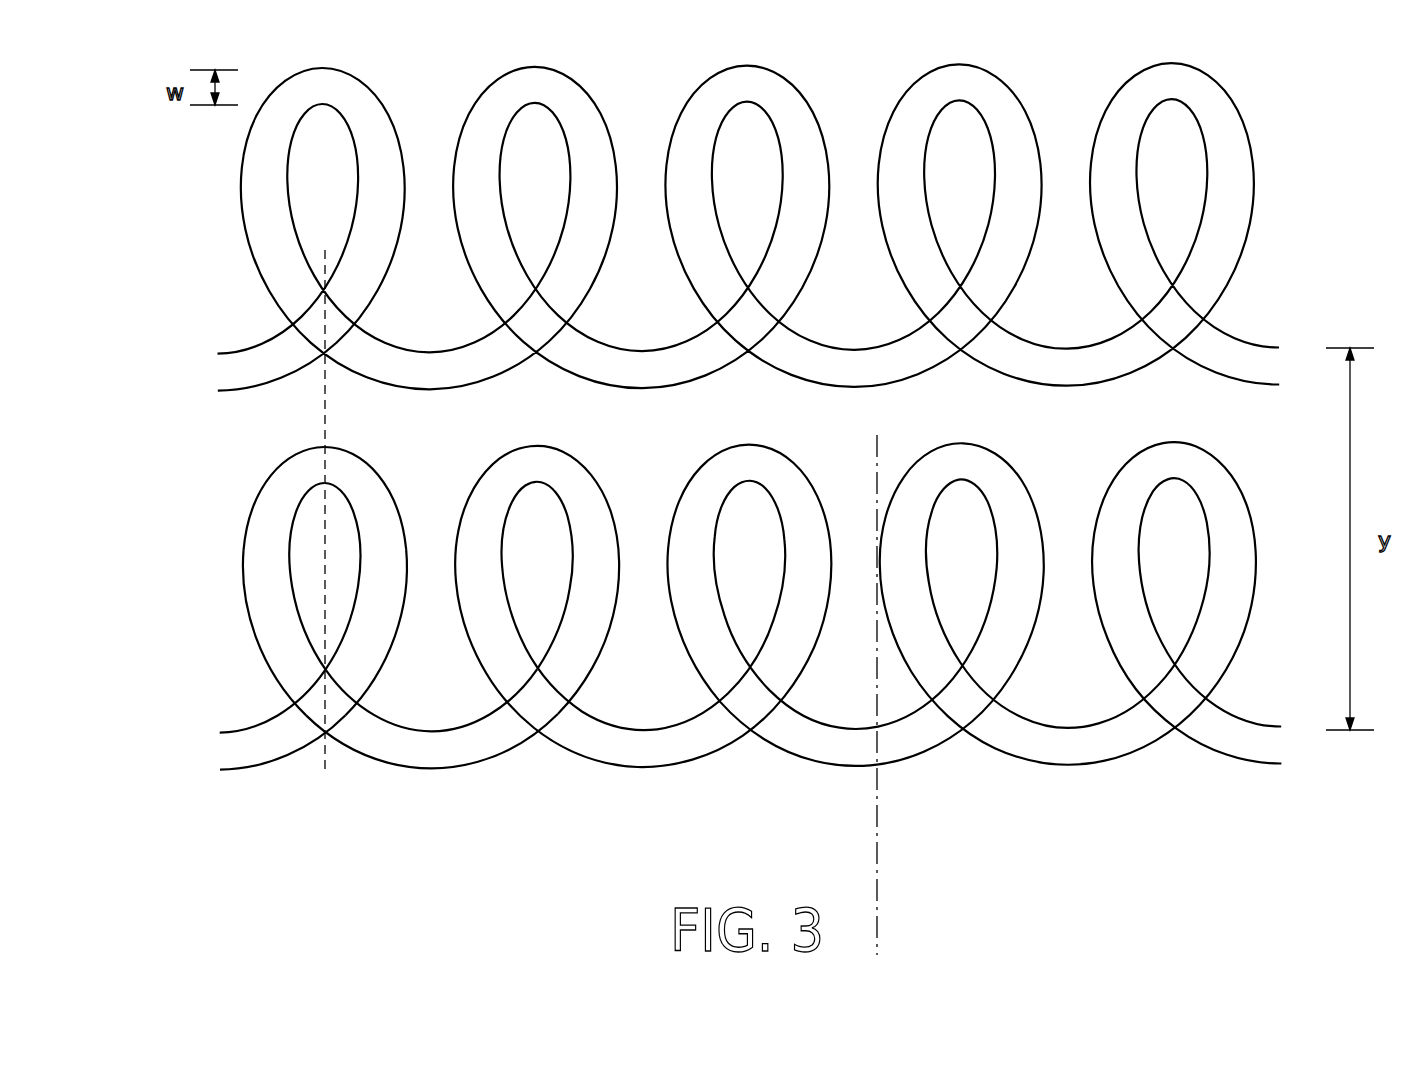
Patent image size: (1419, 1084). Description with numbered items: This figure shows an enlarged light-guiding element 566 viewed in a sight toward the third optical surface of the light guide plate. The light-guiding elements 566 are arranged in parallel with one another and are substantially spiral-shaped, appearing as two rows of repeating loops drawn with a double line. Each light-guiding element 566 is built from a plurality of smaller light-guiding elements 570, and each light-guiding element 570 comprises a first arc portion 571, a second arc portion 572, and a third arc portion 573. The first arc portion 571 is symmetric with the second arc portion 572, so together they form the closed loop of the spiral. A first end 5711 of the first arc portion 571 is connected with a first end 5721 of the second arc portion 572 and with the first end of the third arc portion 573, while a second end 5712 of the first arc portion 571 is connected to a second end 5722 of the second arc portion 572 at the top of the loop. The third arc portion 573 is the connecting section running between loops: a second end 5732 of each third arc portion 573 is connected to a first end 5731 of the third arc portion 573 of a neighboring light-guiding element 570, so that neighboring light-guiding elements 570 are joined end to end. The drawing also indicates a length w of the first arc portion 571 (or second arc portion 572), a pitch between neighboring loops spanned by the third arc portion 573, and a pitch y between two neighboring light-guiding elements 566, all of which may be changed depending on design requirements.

The light-guiding element 566 is at (700, 490).
The light-guiding element 570 is at (348, 765).
The first arc portion 571 is at (222, 576).
The first end of the first arc portion 5711 is at (213, 658).
The second end of the first arc portion 5712 is at (292, 487).
The second arc portion 572 is at (409, 570).
The first end of the second arc portion 5721 is at (402, 641).
The second end of the second arc portion 5722 is at (366, 490).
The third arc portion 573 is at (435, 793).
The first end of the third arc portion 5731 is at (354, 726).
The second end of the third arc portion 5732 is at (547, 740).